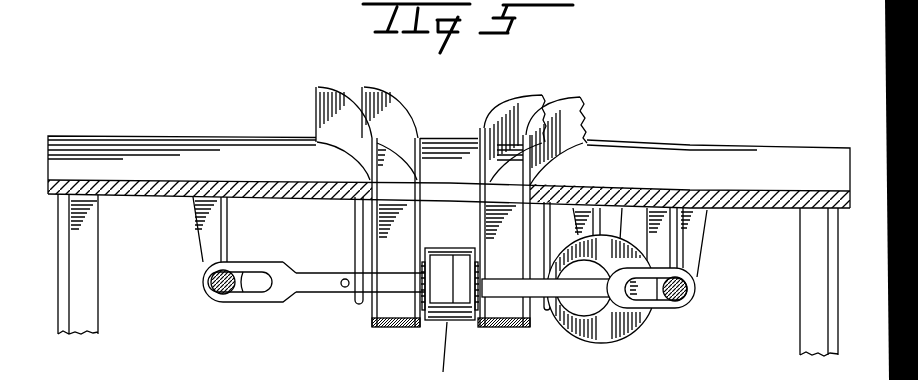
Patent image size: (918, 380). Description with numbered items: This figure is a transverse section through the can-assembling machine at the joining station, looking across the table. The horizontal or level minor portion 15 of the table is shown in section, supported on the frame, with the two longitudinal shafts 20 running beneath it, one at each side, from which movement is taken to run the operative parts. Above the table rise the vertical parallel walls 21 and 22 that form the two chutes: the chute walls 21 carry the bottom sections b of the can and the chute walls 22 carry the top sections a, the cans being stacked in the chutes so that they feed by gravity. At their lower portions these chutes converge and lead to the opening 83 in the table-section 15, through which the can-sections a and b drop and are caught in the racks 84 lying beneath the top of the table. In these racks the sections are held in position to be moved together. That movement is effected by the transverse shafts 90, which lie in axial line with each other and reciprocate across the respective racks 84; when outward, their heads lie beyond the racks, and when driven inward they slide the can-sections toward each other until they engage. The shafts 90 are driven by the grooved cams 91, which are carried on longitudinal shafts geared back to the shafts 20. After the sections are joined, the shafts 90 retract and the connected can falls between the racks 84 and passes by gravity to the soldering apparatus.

The horizontal table portion 15 is at (743, 210).
The longitudinal shaft 20 is at (218, 296).
The chute wall 21 is at (380, 127).
The chute wall 22 is at (530, 108).
The opening 83 is at (503, 193).
The rack 84 is at (403, 307).
The transverse shaft 90 is at (322, 288).
The grooved cam 91 is at (638, 322).
The top section a is at (462, 322).
The bottom section b is at (432, 322).